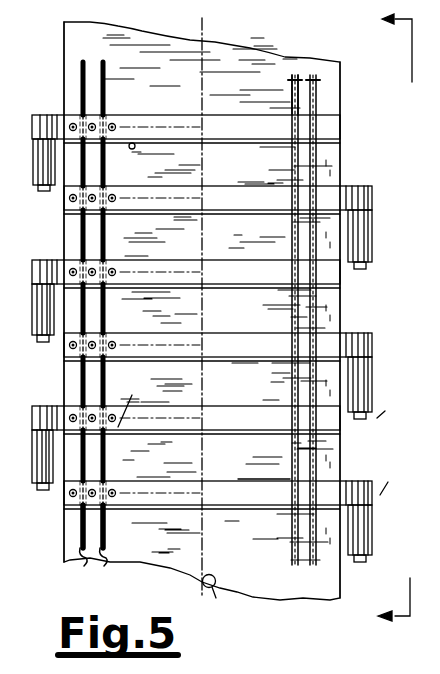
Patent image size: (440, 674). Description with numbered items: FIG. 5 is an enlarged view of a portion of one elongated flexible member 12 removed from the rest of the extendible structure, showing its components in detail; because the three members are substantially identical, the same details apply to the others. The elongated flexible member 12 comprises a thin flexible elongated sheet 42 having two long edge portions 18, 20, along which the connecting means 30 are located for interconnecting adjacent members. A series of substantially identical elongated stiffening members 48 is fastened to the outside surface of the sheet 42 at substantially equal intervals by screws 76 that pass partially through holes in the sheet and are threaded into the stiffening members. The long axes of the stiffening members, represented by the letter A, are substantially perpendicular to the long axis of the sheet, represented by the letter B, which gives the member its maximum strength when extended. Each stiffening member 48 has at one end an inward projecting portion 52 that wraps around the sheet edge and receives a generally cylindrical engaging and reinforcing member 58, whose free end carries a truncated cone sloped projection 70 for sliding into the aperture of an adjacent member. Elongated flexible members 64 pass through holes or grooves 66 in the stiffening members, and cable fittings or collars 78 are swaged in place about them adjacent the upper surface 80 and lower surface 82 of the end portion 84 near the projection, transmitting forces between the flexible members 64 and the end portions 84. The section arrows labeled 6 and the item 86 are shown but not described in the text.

The elongated flexible member 12 is at (235, 67).
The edge portion 18 is at (342, 305).
The edge portion 20 is at (64, 392).
The connecting means 30 is at (388, 220).
The thin flexible elongated sheet 42 is at (264, 467).
The elongated stiffening member 48 is at (247, 127).
The projecting portion 52 is at (374, 186).
The generally cylindrical engaging and reinforcing member 58 is at (230, 347).
The elongated flexible member 64 is at (110, 307).
The holes or grooves 66 is at (117, 333).
The truncated cone sloped projection 70 is at (366, 268).
The screws 76 is at (111, 126).
The cable fittings or collars 78 is at (110, 118).
The upper surface 80 is at (180, 388).
The lower surface 82 is at (134, 144).
The end portion 84 is at (103, 100).
The rod end 86 is at (330, 114).
The long axis of the stiffening members A is at (390, 441).
The long axis of the flexible sheet B is at (216, 597).
The section line 6 is at (383, 319).